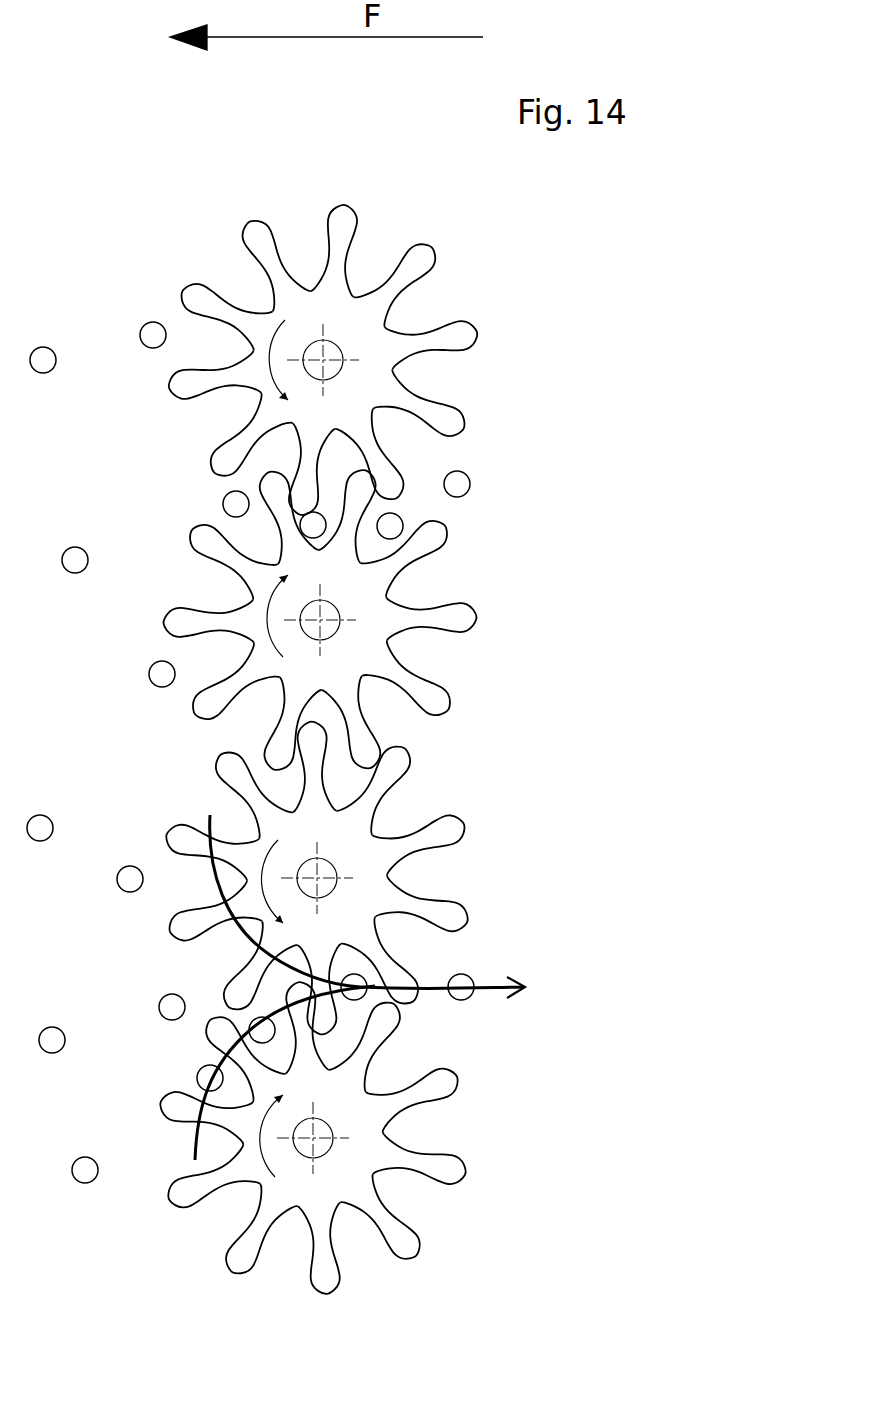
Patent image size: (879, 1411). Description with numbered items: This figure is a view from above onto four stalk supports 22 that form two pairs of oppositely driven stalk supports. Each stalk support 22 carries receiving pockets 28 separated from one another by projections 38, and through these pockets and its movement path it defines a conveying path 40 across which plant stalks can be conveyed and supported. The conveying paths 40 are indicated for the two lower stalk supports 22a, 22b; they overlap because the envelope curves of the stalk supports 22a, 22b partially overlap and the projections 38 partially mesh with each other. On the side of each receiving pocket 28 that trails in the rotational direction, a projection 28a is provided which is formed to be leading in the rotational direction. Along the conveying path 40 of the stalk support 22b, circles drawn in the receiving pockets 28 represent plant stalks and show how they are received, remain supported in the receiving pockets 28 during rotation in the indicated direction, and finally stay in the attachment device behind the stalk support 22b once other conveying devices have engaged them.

The stalk support 22 is at (314, 479).
The stalk support 22a is at (364, 868).
The stalk support 22b is at (357, 1125).
The receiving pocket 28 is at (314, 479).
The projection 28a is at (313, 761).
The projection 38 is at (265, 252).
The conveying path 40 is at (237, 1040).